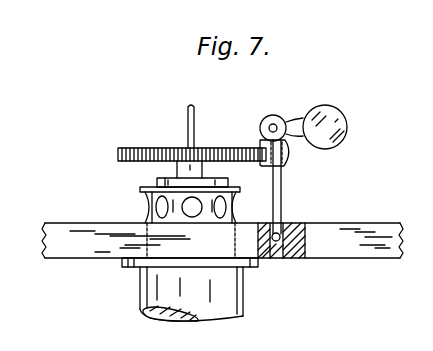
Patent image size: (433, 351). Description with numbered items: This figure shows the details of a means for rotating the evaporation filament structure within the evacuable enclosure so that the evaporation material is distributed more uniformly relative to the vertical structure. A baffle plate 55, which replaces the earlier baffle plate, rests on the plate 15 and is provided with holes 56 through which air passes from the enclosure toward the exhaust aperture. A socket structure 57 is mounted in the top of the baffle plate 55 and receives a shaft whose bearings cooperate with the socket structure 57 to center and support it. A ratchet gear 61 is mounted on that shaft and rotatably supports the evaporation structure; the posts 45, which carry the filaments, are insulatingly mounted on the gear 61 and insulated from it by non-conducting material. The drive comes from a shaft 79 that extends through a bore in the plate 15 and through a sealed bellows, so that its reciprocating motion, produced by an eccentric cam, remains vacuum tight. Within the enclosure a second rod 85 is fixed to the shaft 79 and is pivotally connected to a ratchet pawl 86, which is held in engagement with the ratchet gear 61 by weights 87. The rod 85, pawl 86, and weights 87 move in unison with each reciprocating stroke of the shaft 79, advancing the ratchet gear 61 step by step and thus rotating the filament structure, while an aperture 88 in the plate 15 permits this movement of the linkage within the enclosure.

The plate 15 is at (340, 248).
The posts 45 is at (188, 116).
The baffle plate 55 is at (140, 192).
The holes 56 is at (156, 207).
The socket structure 57 is at (157, 182).
The ratchet gear 61 is at (118, 153).
The shaft 79 is at (271, 248).
The second rod 85 is at (283, 190).
The ratchet pawl 86 is at (288, 154).
The weights 87 is at (336, 141).
The aperture 88 is at (282, 222).